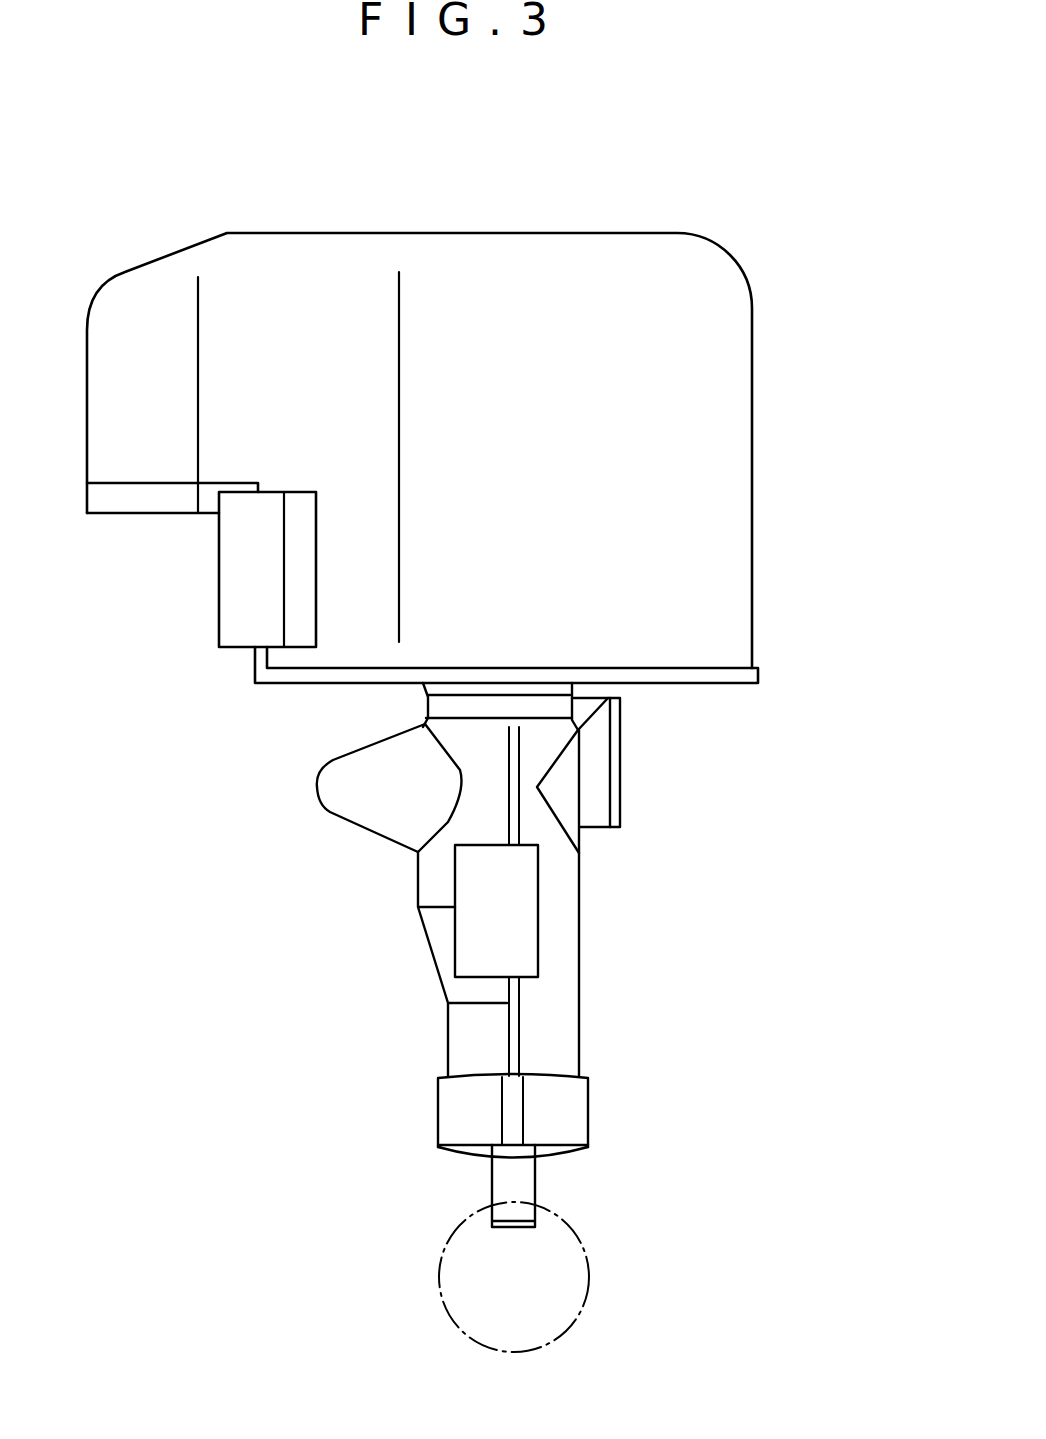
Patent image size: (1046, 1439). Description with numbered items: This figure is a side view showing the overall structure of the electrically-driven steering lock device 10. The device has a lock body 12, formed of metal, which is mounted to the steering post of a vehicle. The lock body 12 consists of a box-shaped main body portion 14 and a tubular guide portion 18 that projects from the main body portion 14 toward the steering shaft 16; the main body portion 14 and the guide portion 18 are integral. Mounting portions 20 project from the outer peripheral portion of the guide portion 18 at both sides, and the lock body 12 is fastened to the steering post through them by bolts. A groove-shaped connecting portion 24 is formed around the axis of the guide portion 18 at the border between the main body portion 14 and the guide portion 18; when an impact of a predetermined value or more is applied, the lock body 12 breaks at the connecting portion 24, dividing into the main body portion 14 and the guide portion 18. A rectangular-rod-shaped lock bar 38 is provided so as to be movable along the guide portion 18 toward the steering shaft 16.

The electrically-driven steering lock device 10 is at (797, 792).
The lock body 12 is at (753, 641).
The main body portion 14 is at (752, 472).
The steering shaft 16 is at (585, 1300).
The guide portion 18 is at (573, 1023).
The mounting portions 20 is at (613, 786).
The connecting portion 24 is at (430, 703).
The lock bar 38 is at (525, 1179).